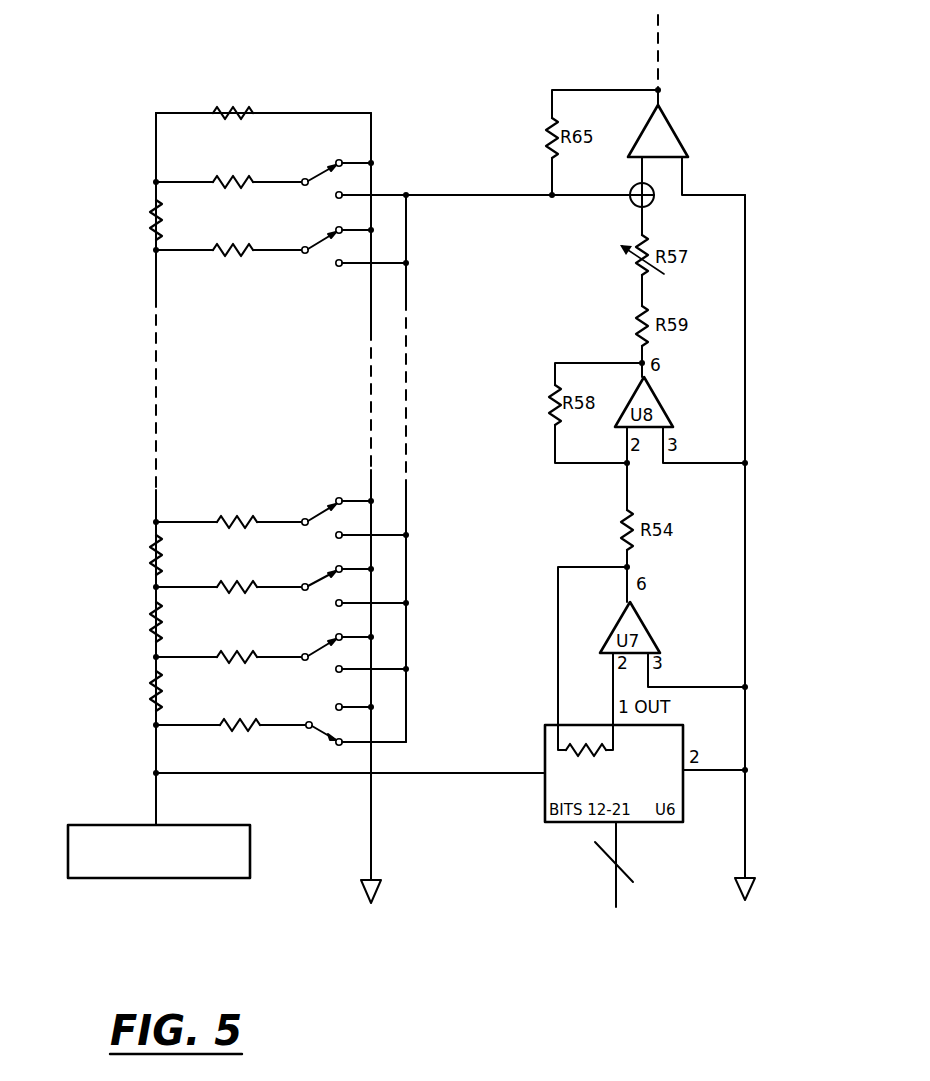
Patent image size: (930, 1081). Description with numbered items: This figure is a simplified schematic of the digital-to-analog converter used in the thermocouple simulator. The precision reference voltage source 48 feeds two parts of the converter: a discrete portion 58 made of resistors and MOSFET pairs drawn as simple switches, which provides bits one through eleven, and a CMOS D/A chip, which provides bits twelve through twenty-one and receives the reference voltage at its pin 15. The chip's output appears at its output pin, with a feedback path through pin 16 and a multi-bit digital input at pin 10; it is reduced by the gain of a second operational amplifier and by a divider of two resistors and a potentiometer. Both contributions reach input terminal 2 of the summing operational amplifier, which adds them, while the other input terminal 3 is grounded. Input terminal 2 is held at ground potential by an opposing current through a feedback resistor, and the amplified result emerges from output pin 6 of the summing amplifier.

The discrete portion 58 is at (390, 60).
The precision reference voltage source 48 is at (207, 825).
The amplifier U9 output pin 6 is at (658, 86).
The input terminal 2 is at (643, 181).
The input terminal 3 is at (713, 175).
The pin 15 is at (349, 763).
The U6 feedback pin 16 is at (592, 661).
The U6 digital input pin 10 is at (619, 864).